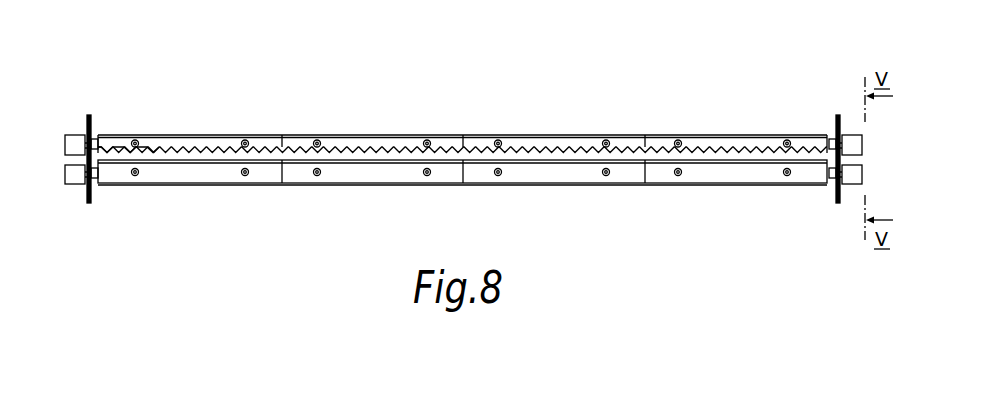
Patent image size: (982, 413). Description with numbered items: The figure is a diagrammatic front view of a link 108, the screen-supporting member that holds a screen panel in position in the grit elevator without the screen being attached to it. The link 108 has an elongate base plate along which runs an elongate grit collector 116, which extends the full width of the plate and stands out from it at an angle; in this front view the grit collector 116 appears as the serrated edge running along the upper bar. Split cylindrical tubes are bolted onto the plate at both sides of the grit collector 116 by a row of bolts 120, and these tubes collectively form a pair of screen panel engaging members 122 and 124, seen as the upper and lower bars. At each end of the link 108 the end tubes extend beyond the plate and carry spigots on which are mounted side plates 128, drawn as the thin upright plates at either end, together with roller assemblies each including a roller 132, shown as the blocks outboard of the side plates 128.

The link 108 is at (489, 131).
The grit collector 116 is at (537, 150).
The bolts 120 is at (427, 179).
The screen panel engaging member 122 is at (247, 134).
The screen panel engaging member 124 is at (243, 184).
The side plate 128 is at (836, 120).
The roller 132 is at (78, 145).